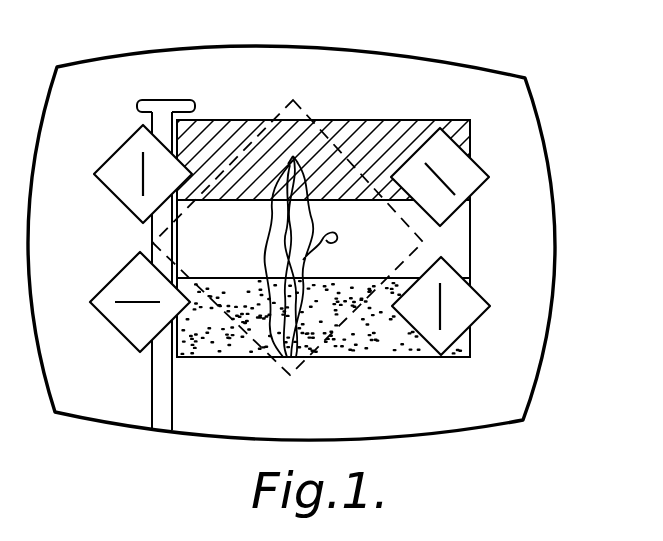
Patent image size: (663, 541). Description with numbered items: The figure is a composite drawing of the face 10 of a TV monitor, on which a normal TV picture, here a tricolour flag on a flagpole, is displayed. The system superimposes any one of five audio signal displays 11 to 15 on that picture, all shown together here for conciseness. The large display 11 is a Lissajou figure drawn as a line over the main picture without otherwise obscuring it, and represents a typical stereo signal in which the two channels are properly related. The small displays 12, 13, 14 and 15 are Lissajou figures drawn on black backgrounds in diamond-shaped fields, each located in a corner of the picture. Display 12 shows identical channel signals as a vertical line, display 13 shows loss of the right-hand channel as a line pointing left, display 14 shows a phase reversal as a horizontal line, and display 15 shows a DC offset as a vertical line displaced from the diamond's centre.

The face of a TV monitor 10 is at (110, 55).
The large audio signal display 11 is at (301, 359).
The small audio signal display 12 is at (117, 202).
The small audio signal display 13 is at (475, 200).
The small audio signal display 14 is at (113, 332).
The small audio signal display 15 is at (475, 325).